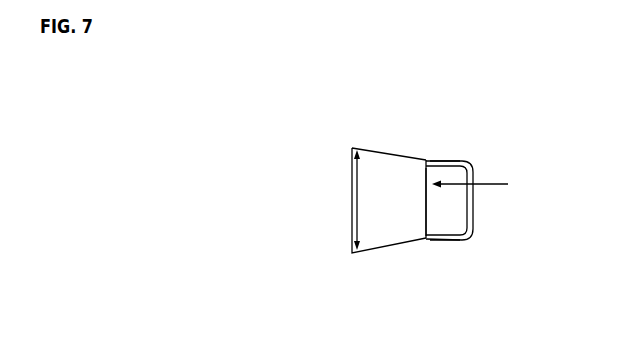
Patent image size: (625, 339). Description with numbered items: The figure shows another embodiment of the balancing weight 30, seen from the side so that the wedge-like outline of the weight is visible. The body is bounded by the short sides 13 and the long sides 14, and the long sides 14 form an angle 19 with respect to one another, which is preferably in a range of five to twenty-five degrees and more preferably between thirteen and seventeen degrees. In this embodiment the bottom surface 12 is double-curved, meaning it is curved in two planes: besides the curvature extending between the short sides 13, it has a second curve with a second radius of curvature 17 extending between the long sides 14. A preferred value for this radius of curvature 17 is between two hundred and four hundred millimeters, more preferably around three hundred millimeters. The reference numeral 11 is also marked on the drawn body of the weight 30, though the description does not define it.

The balancing weight 30 is at (483, 122).
The magnet body 11 is at (474, 215).
The bottom surface 12 is at (426, 231).
The short side 13 is at (442, 200).
The long sides 14 is at (451, 161).
The second radius of curvature 17 is at (498, 184).
The angle 19 is at (357, 200).